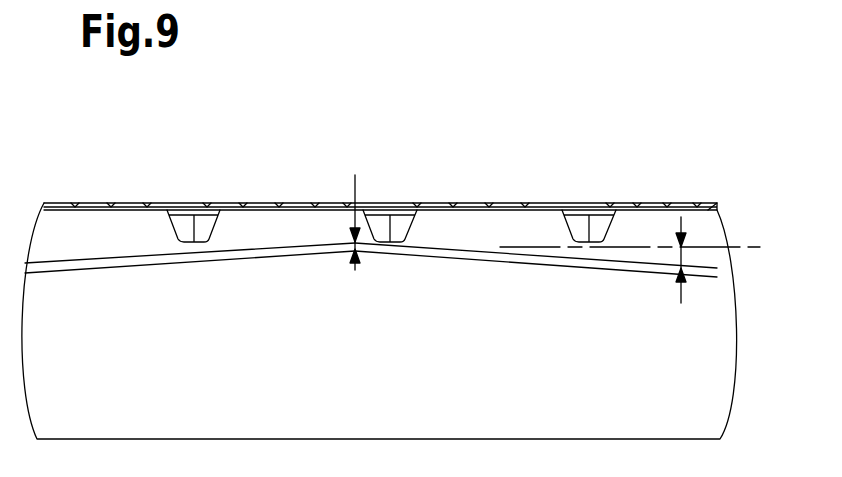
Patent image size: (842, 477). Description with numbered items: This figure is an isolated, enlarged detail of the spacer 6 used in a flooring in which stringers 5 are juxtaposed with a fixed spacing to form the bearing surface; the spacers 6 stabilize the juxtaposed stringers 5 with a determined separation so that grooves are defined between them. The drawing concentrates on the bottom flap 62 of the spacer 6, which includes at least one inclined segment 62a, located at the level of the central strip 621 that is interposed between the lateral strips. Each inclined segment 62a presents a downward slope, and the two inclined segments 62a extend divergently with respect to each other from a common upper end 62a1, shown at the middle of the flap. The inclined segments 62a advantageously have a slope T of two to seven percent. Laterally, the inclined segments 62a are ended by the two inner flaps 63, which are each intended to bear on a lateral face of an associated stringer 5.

The stringer 5 is at (623, 212).
The spacer 6 is at (536, 297).
The bottom flap 62 is at (525, 265).
The inclined segment 62a is at (169, 262).
The upper end 62a1 is at (343, 242).
The central strip 621 is at (536, 297).
The inner flap 63 is at (717, 375).
The slope T is at (681, 297).